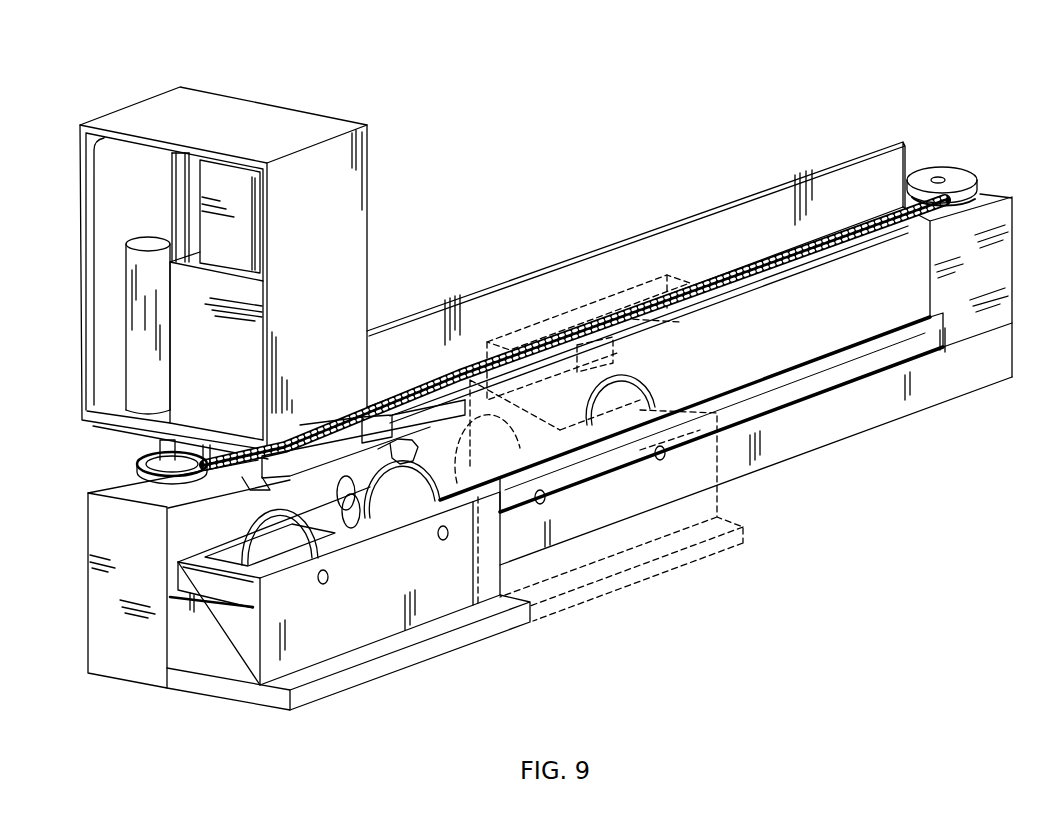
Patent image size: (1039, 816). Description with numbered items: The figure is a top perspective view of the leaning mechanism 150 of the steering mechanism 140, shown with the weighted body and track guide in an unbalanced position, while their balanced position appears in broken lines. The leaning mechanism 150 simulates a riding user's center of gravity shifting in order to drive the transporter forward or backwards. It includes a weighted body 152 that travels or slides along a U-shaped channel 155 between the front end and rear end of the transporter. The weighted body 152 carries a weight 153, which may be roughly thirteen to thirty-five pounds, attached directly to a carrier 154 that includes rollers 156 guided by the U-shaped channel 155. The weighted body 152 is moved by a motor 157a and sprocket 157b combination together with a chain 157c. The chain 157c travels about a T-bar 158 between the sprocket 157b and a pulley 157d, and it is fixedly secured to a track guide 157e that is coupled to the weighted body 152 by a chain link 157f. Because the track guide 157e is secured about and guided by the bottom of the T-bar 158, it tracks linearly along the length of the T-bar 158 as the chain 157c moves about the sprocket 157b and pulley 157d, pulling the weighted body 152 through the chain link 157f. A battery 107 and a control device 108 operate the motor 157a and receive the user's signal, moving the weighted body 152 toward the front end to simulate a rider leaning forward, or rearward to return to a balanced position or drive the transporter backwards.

The steering mechanism 140 is at (720, 82).
The battery 107 is at (222, 342).
The control device 108 is at (232, 178).
The leaning mechanism 150 is at (412, 695).
The weighted body 152 is at (243, 720).
The weight 153 is at (457, 638).
The carrier 154 is at (330, 638).
The U-shaped channel 155 is at (178, 665).
The rollers 156 is at (365, 520).
The motor 157a is at (135, 320).
The sprocket 157b is at (140, 466).
The chain 157c is at (222, 488).
The pulley 157d is at (958, 183).
The track guide 157e is at (437, 377).
The chain link 157f is at (336, 494).
The T-bar 158 is at (738, 216).